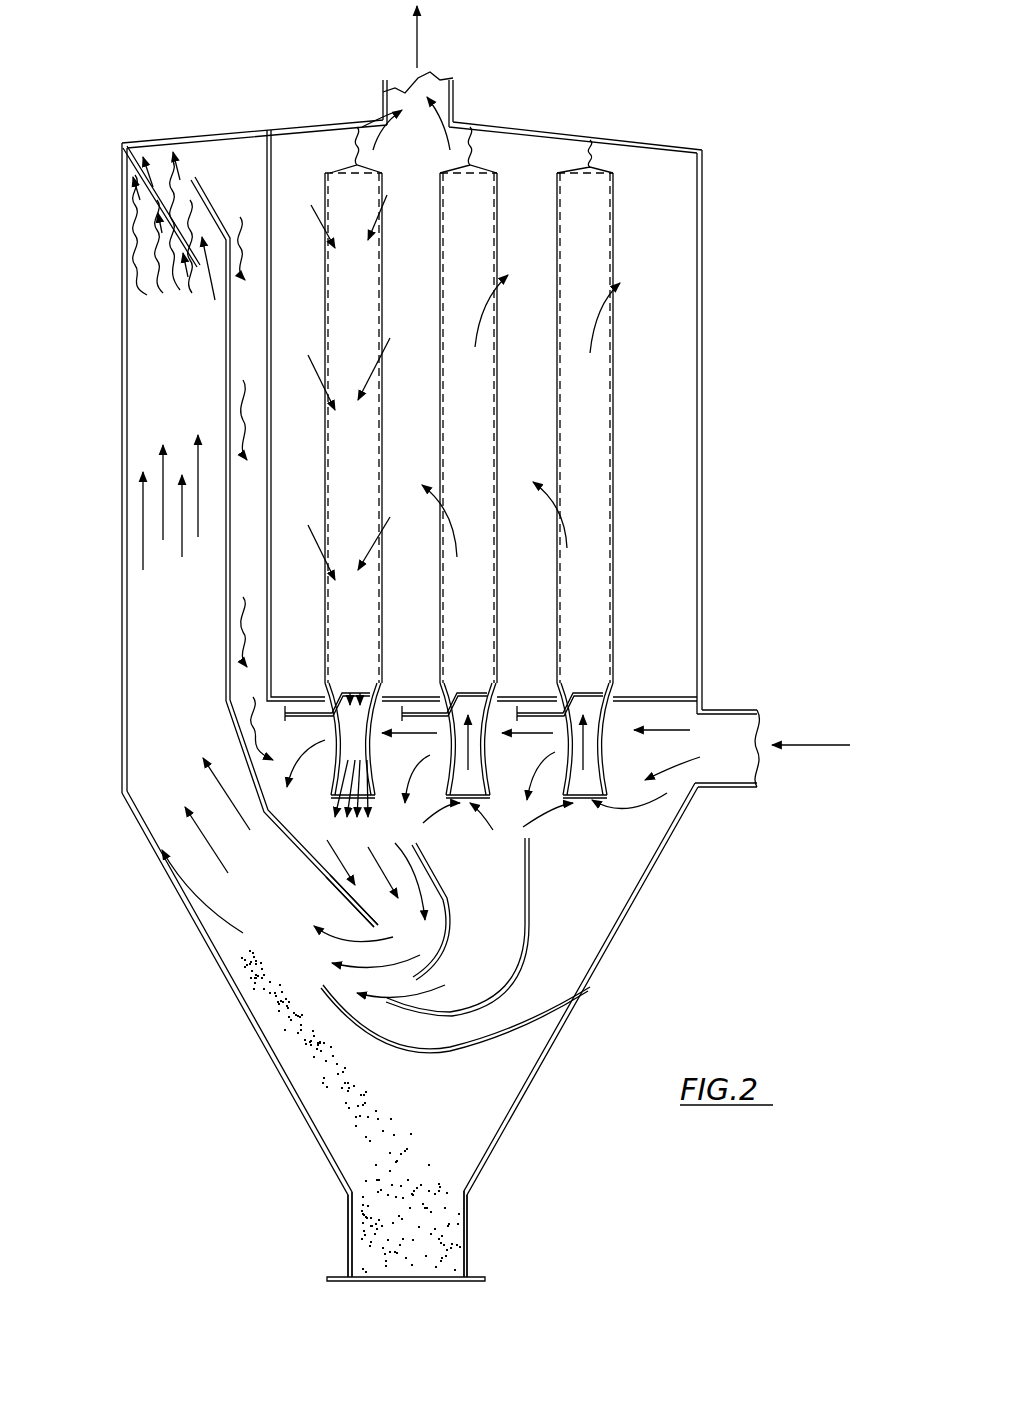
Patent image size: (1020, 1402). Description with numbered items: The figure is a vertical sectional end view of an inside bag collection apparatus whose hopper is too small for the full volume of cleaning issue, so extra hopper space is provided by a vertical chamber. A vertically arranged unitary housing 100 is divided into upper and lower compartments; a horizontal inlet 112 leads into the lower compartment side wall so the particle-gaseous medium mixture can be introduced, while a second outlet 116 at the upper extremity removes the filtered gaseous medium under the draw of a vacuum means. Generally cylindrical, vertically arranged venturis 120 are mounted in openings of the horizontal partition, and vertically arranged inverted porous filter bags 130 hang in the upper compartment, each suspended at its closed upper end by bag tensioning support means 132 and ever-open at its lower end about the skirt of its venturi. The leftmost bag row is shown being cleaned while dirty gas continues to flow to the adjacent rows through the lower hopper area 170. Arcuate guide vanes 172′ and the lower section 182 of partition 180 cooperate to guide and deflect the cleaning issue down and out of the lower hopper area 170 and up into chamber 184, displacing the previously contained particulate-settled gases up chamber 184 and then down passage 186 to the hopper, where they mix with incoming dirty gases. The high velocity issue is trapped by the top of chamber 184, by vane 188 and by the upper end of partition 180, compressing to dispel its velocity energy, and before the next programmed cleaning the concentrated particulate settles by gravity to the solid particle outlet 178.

The housing 100 is at (703, 413).
The horizontal inlet 112 is at (812, 741).
The second outlet 116 is at (437, 73).
The venturi 120 is at (605, 762).
The inverted porous filter bag 130 is at (614, 597).
The bag tensioning support means 132 is at (590, 152).
The lower chamber 170 is at (606, 869).
The arcuate guide vane 172′ is at (525, 1020).
The solid particle outlet 178 is at (430, 1278).
The partition 180 is at (221, 688).
The lower section of partition 182 is at (328, 881).
The chamber 184 is at (192, 618).
The passage 186 is at (262, 553).
The vane 188 is at (170, 240).